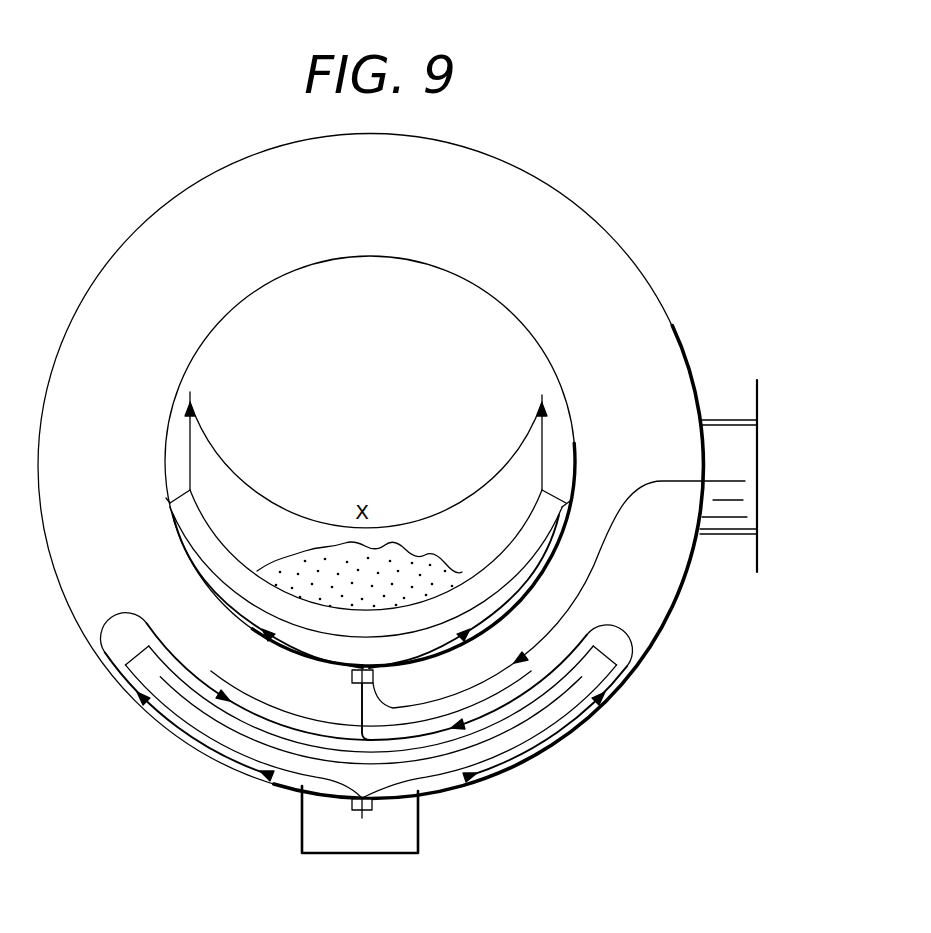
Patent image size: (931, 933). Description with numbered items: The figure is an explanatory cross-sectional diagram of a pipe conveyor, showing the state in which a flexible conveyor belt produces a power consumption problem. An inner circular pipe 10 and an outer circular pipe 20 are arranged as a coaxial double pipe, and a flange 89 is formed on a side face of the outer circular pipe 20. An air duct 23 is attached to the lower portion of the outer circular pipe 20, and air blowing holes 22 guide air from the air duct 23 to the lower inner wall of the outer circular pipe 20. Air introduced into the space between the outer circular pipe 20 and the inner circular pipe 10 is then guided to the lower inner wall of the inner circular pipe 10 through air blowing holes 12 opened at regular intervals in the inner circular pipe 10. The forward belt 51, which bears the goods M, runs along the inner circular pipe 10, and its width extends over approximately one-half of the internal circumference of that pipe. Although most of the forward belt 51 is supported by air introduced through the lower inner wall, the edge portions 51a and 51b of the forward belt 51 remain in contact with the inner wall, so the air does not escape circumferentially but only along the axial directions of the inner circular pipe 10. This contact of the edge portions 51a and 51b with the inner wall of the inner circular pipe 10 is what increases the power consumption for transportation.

The outer circular pipe 20 is at (667, 312).
The inner circular pipe 10 is at (562, 388).
The flange 89 is at (757, 380).
The forward belt 51 is at (238, 582).
The edge portion 51a is at (562, 507).
The edge portion 51b is at (170, 503).
The air blowing holes 12 is at (357, 686).
The air blowing holes 22 is at (357, 808).
The air duct 23 is at (418, 821).
The goods M is at (430, 562).